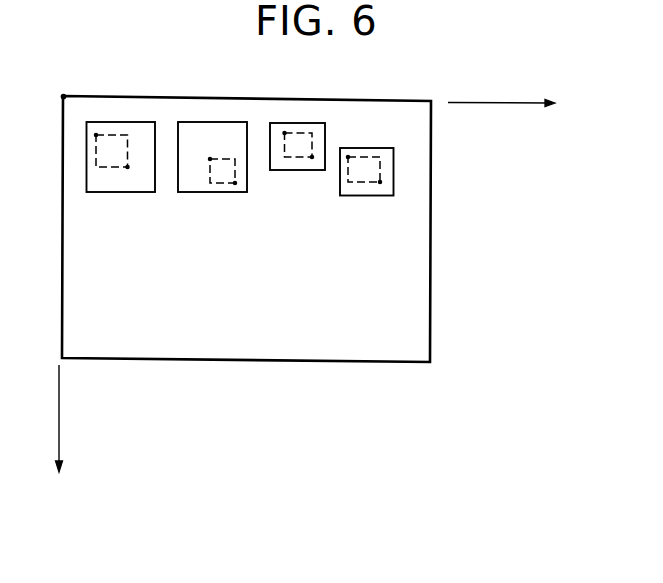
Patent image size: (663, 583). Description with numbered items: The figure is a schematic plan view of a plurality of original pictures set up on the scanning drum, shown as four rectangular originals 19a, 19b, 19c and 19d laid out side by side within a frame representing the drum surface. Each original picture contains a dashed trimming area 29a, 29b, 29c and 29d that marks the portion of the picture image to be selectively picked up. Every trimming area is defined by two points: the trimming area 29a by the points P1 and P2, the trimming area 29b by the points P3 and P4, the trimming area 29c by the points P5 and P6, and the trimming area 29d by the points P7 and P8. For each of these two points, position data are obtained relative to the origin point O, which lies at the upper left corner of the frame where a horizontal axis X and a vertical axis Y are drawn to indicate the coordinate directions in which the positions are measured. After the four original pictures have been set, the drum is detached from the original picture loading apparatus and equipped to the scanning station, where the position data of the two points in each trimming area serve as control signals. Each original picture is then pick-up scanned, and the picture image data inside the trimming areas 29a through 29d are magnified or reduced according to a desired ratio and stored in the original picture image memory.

The original picture 19a is at (112, 192).
The original picture 19b is at (190, 192).
The original picture 19c is at (283, 170).
The original picture 19d is at (352, 196).
The trimming area 29a is at (113, 135).
The trimming area 29b is at (227, 159).
The trimming area 29c is at (302, 133).
The trimming area 29d is at (373, 157).
The point P1 is at (96, 135).
The point P2 is at (128, 167).
The point P3 is at (210, 159).
The point P4 is at (235, 183).
The point P5 is at (284, 133).
The point P6 is at (312, 157).
The point P7 is at (348, 157).
The point P8 is at (380, 182).
The origin point O is at (57, 83).
The X axis X is at (512, 105).
The Y axis Y is at (57, 433).